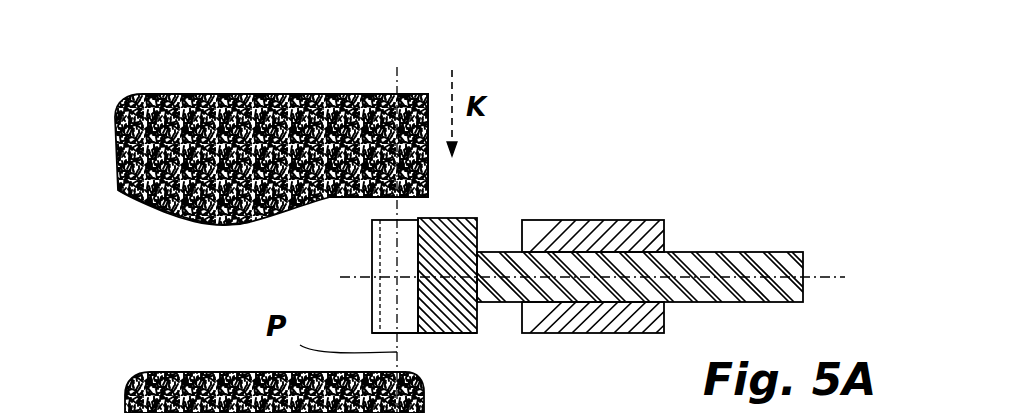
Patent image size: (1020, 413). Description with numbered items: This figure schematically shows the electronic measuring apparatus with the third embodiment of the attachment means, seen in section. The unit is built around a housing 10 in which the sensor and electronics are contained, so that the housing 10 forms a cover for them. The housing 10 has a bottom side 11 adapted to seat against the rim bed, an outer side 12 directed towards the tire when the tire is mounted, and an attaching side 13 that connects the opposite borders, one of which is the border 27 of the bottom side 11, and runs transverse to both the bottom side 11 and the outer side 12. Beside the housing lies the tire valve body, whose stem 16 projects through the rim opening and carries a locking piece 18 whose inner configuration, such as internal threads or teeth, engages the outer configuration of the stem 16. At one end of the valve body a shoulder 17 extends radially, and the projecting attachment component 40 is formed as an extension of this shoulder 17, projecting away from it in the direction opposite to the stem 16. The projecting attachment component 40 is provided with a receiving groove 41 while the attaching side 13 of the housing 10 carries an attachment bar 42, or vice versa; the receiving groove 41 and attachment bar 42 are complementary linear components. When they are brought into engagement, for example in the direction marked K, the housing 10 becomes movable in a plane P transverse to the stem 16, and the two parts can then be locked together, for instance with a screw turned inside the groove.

The housing 10 is at (115, 147).
The bottom side 11 is at (168, 211).
The outer side 12 is at (240, 95).
The attaching side 13 is at (429, 174).
The stem 16 is at (710, 268).
The shoulder 17 is at (456, 232).
The locking piece 18 is at (632, 222).
The border 27 is at (236, 226).
The projecting attachment component 40 is at (424, 340).
The receiving groove 41 is at (387, 235).
The attachment bar 42 is at (408, 95).